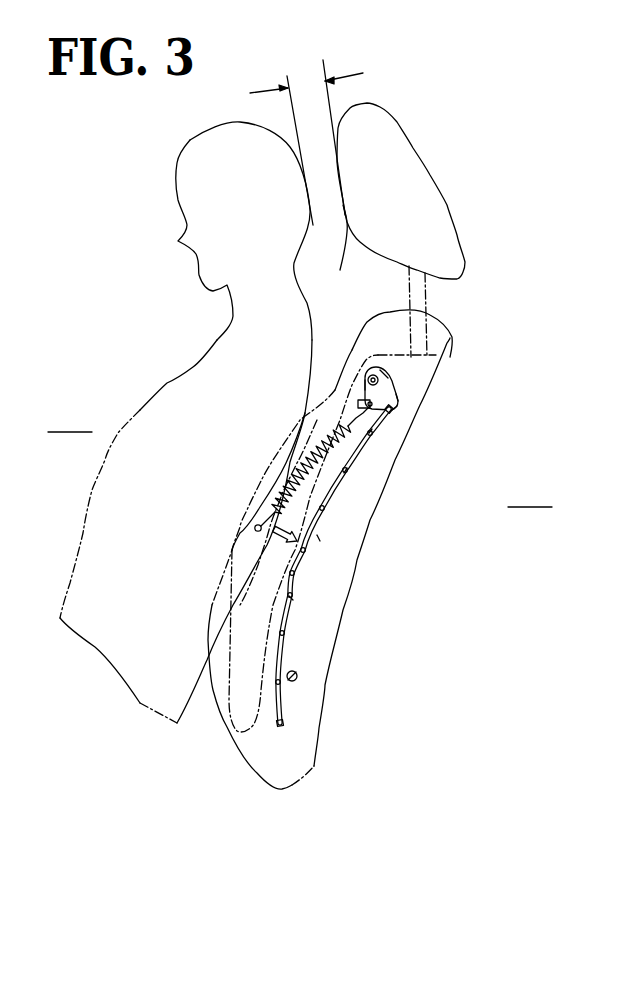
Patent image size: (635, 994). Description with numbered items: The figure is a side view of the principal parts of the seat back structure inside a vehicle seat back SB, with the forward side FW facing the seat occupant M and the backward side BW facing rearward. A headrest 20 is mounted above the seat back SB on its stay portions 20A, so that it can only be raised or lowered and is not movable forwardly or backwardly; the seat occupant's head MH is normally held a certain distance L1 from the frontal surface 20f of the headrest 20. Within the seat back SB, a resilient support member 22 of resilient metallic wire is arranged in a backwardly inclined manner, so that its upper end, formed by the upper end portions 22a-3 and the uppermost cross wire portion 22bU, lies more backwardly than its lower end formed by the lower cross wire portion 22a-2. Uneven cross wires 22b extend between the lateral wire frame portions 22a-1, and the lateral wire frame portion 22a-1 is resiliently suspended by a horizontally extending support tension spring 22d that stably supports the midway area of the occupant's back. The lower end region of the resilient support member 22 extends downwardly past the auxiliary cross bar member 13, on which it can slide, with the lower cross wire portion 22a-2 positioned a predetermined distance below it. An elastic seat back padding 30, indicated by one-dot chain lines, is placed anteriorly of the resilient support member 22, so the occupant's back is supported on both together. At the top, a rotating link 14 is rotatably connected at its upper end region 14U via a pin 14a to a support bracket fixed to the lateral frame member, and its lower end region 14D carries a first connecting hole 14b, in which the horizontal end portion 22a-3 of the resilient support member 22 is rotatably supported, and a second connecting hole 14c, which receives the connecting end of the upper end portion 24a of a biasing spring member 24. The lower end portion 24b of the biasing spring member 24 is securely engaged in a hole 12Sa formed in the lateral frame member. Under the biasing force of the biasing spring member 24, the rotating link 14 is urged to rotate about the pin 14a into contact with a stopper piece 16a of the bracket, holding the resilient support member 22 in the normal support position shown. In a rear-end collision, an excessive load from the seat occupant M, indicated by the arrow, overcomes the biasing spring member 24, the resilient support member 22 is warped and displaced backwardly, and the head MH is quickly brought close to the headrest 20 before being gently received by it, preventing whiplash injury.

The distance L1 is at (306, 141).
The seat occupant's head MH is at (190, 148).
The seat occupant M is at (167, 383).
The seat back SB is at (330, 747).
The forward side FW is at (70, 419).
The backward side BW is at (530, 494).
The headrest 20 is at (408, 163).
The frontal surface of headrest 20f is at (348, 252).
The stay portion 20A is at (430, 295).
The rotating link 14 is at (408, 388).
The upper end region of rotating link 14U is at (387, 378).
The lower end region of rotating link 14D is at (398, 399).
The pin 14a is at (368, 375).
The first connecting hole 14b is at (397, 410).
The second connecting hole 14c is at (364, 384).
The stopper piece 16a is at (358, 403).
The resilient support member 22 is at (298, 625).
The lateral wire frame portion 22a-1 is at (318, 538).
The lower cross wire portion 22a-2 is at (282, 725).
The upper end portion 22a-3 is at (397, 408).
The uneven cross wire 22b is at (348, 470).
The uppermost cross wire portion 22bU is at (372, 432).
The support tension spring 22d is at (296, 573).
The biasing spring member 24 is at (303, 462).
The upper end portion of biasing spring member 24a is at (362, 418).
The lower end portion of biasing spring member 24b is at (265, 518).
The hole 12Sa is at (254, 528).
The auxiliary cross bar member 13 is at (297, 681).
The seat back padding 30 is at (228, 722).